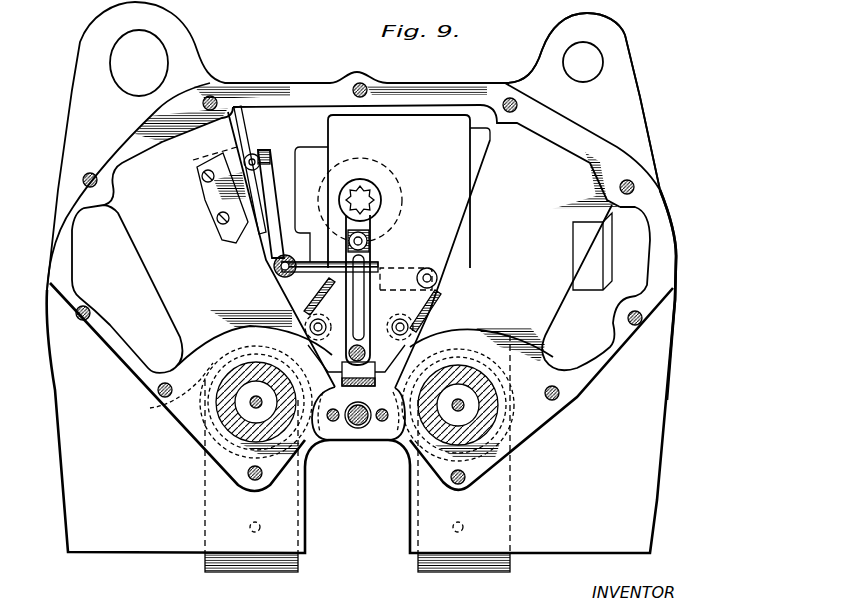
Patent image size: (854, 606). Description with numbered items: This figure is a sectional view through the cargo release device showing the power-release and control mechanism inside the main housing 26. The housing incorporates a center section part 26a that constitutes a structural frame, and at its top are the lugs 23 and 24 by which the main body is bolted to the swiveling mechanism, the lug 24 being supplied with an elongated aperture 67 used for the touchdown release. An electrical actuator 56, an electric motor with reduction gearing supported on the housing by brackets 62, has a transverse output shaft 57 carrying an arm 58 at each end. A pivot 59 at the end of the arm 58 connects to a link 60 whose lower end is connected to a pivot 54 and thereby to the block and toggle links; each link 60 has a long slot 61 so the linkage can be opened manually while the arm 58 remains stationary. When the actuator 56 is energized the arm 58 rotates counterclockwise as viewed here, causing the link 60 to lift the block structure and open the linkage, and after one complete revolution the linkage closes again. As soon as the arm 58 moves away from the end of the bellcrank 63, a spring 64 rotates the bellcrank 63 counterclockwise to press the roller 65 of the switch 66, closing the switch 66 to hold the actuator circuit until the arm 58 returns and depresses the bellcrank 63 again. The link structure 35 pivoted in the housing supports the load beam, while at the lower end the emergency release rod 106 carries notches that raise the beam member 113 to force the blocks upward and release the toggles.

The lug 23 is at (642, 95).
The lug 24 is at (72, 103).
The main housing 26 is at (666, 381).
The center section part 26a is at (668, 237).
The link structure 35 is at (250, 571).
The pivot 54 is at (356, 383).
The electrical actuator 56 is at (402, 120).
The output shaft 57 is at (366, 188).
The arm 58 is at (381, 212).
The pivot 59 is at (372, 240).
The link 60 is at (388, 271).
The long slot 61 is at (352, 305).
The bracket 62 is at (423, 293).
The bellcrank 63 is at (268, 148).
The spring 64 is at (286, 276).
The roller 65 is at (258, 152).
The switch 66 is at (240, 150).
The elongated aperture 67 is at (110, 51).
The rod 106 is at (356, 427).
The beam member 113 is at (385, 404).